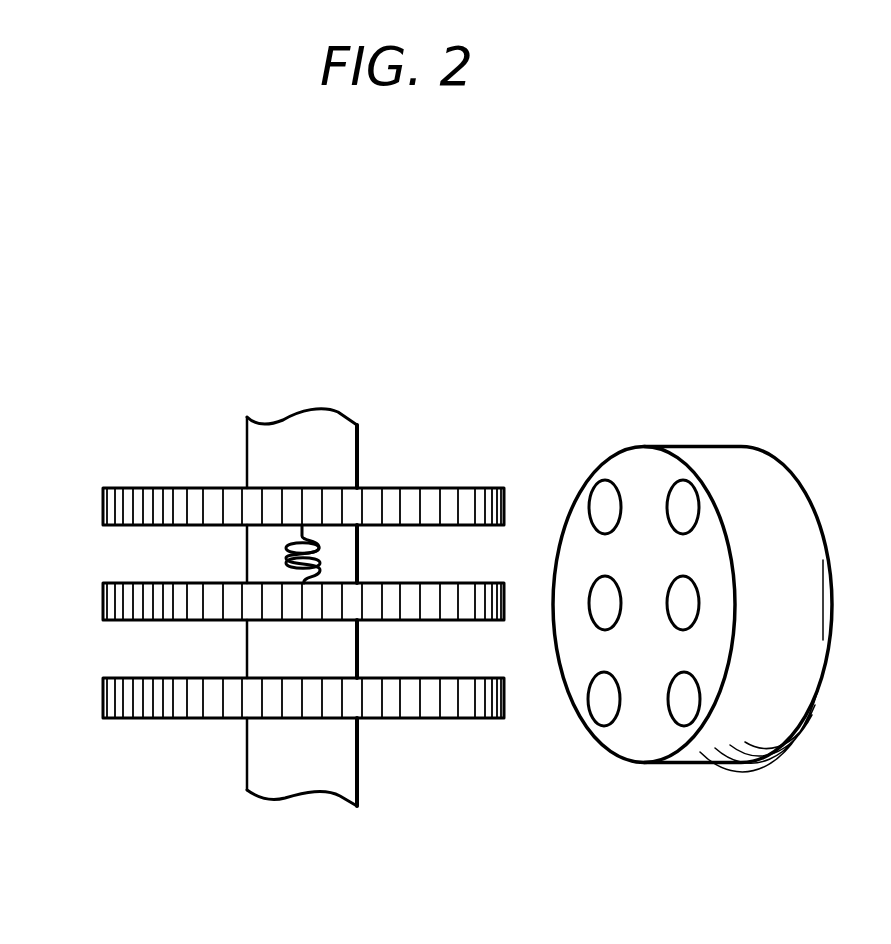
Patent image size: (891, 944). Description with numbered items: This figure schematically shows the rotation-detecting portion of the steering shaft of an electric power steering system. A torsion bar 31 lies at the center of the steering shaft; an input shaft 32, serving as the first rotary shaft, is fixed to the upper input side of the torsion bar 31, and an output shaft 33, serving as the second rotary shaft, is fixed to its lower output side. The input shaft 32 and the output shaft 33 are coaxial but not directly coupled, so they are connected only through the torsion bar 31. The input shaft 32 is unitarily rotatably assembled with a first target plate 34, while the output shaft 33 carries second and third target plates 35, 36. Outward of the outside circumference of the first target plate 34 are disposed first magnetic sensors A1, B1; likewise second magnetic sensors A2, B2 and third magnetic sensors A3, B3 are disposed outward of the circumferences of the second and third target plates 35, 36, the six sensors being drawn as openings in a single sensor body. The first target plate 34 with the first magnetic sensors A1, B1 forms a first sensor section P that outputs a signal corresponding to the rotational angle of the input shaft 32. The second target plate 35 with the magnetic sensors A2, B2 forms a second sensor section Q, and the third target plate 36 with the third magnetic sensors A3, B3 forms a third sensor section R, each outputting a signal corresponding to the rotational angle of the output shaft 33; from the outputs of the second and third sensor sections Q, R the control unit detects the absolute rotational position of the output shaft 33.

The torsion bar 31 is at (320, 554).
The input shaft 32 is at (283, 437).
The output shaft 33 is at (295, 775).
The first target plate 34 is at (178, 487).
The second target plate 35 is at (163, 583).
The third target plate 36 is at (178, 718).
The first sensor section P is at (563, 496).
The second sensor section Q is at (513, 593).
The third sensor section R is at (529, 712).
The first magnetic sensor A1 is at (682, 500).
The second magnetic sensor A2 is at (686, 600).
The third magnetic sensor A3 is at (686, 702).
The first magnetic sensor B1 is at (598, 500).
The second magnetic sensor B2 is at (603, 606).
The third magnetic sensor B3 is at (606, 712).